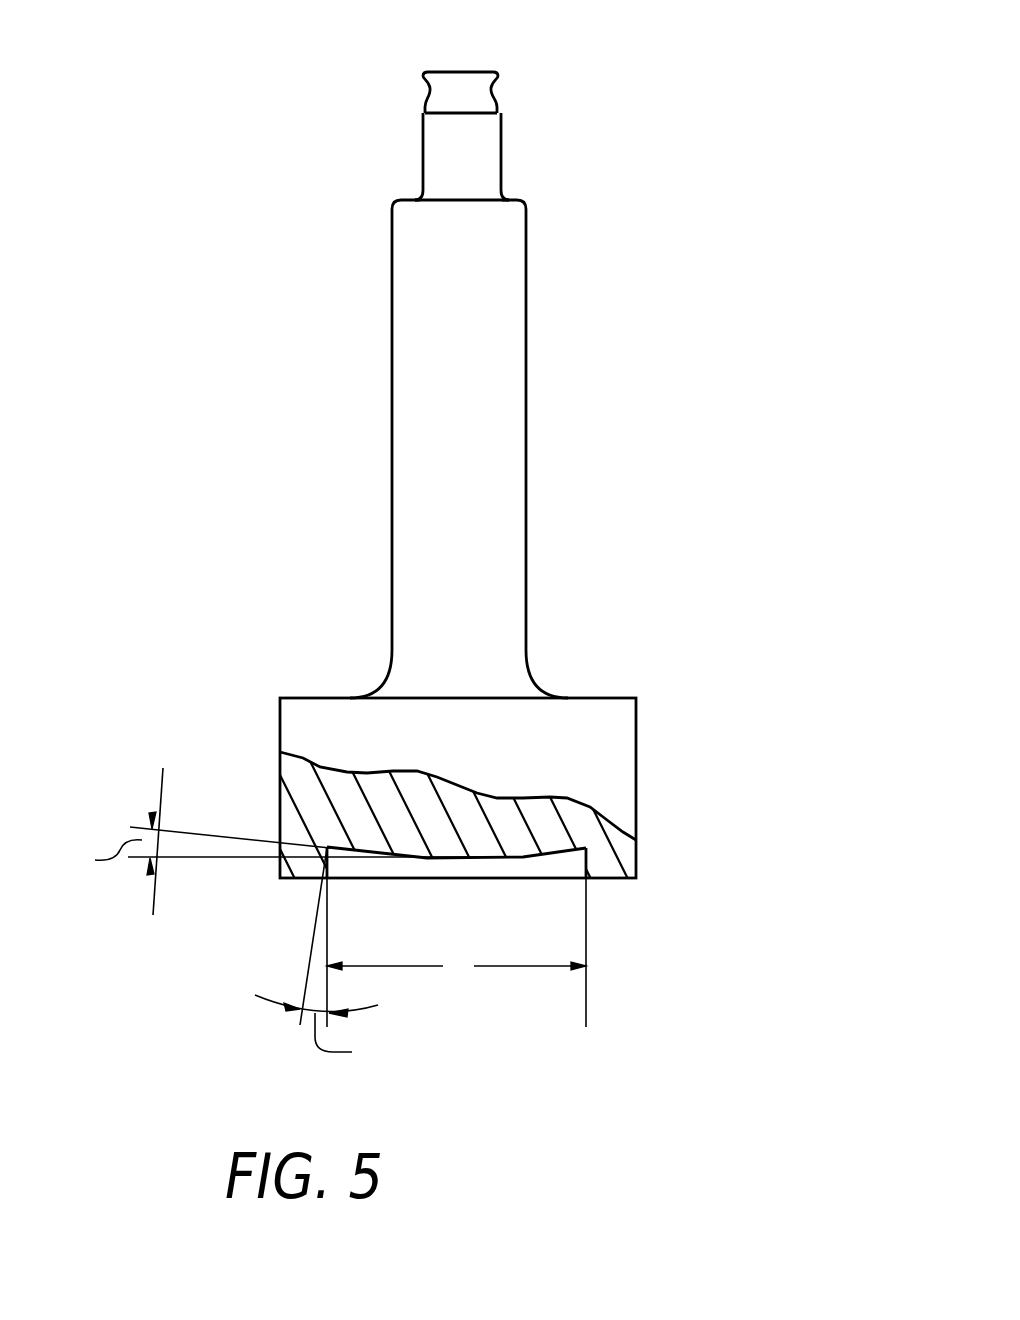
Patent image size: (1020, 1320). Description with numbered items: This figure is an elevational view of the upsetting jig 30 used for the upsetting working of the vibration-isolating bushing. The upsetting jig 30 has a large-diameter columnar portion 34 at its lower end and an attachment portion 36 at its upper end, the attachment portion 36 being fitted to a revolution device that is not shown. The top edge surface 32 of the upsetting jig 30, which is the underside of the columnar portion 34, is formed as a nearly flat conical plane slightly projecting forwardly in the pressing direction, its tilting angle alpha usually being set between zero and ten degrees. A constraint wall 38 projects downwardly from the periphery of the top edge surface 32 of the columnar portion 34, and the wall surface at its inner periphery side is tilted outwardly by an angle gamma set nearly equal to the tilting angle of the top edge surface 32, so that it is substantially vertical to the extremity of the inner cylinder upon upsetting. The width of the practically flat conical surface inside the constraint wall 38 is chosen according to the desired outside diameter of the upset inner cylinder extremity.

The upsetting jig 30 is at (486, 28).
The top edge surface 32 is at (523, 852).
The columnar portion 34 is at (595, 758).
The attachment portion 36 is at (472, 153).
The constraint wall 38 is at (602, 858).